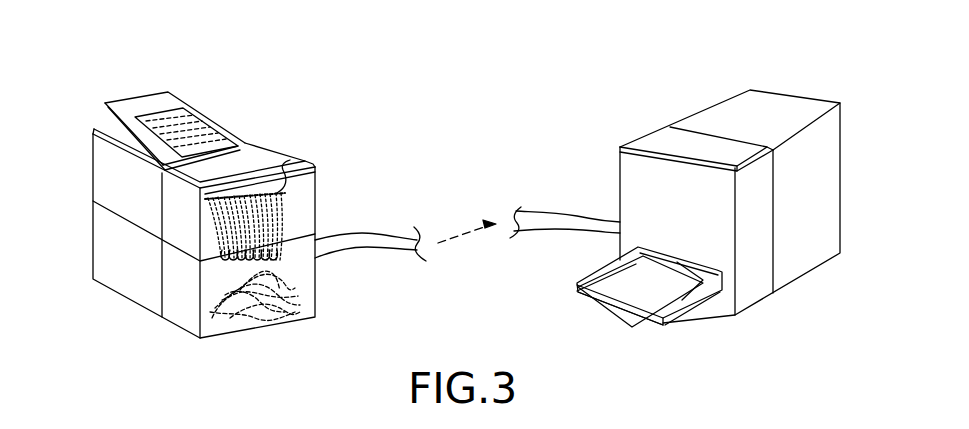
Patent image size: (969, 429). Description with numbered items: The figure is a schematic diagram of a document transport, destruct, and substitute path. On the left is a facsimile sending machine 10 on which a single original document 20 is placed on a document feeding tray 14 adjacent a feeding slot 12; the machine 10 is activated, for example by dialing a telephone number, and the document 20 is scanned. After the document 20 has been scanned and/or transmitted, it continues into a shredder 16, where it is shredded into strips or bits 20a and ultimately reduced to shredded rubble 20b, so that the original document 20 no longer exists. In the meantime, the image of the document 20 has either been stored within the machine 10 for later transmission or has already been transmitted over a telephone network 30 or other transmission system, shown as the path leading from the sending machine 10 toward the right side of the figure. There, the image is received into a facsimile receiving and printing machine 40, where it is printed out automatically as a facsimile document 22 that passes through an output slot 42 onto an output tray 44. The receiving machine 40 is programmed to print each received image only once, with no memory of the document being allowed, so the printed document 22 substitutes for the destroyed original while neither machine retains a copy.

The facsimile sending machine 10 is at (105, 128).
The document feed 12 is at (218, 150).
The document tray 14 is at (137, 133).
The shredder 16 is at (293, 162).
The document 20 is at (190, 122).
The document passing through shredder 20a is at (270, 193).
The shredded document 20b is at (277, 289).
The facsimile document 22 is at (615, 307).
The facsimile transmission medium 30 is at (392, 238).
The facsimile receiving and printing machine 40 is at (757, 110).
The facsimile output slot 42 is at (700, 282).
The facsimile output tray 44 is at (670, 317).